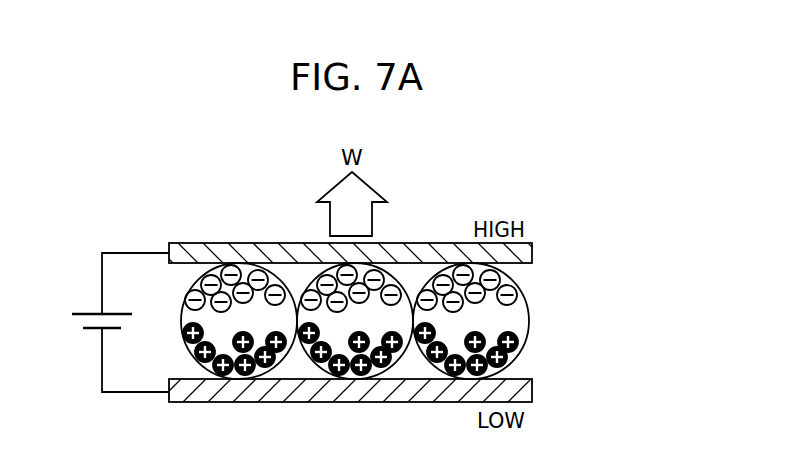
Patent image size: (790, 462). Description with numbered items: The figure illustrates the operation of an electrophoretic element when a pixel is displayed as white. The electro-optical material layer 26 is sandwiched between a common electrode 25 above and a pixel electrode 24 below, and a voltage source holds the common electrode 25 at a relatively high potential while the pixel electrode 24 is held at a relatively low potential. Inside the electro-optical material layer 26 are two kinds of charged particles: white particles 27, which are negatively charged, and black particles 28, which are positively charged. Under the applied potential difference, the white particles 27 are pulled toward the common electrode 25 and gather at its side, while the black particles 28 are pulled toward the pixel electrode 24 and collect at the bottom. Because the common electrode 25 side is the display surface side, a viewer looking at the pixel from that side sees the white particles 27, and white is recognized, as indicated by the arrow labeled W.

The pixel electrode 24 is at (532, 388).
The common electrode 25 is at (532, 252).
The electro-optical material layer 26 is at (585, 321).
The white particles 27 is at (518, 297).
The black particles 28 is at (520, 339).